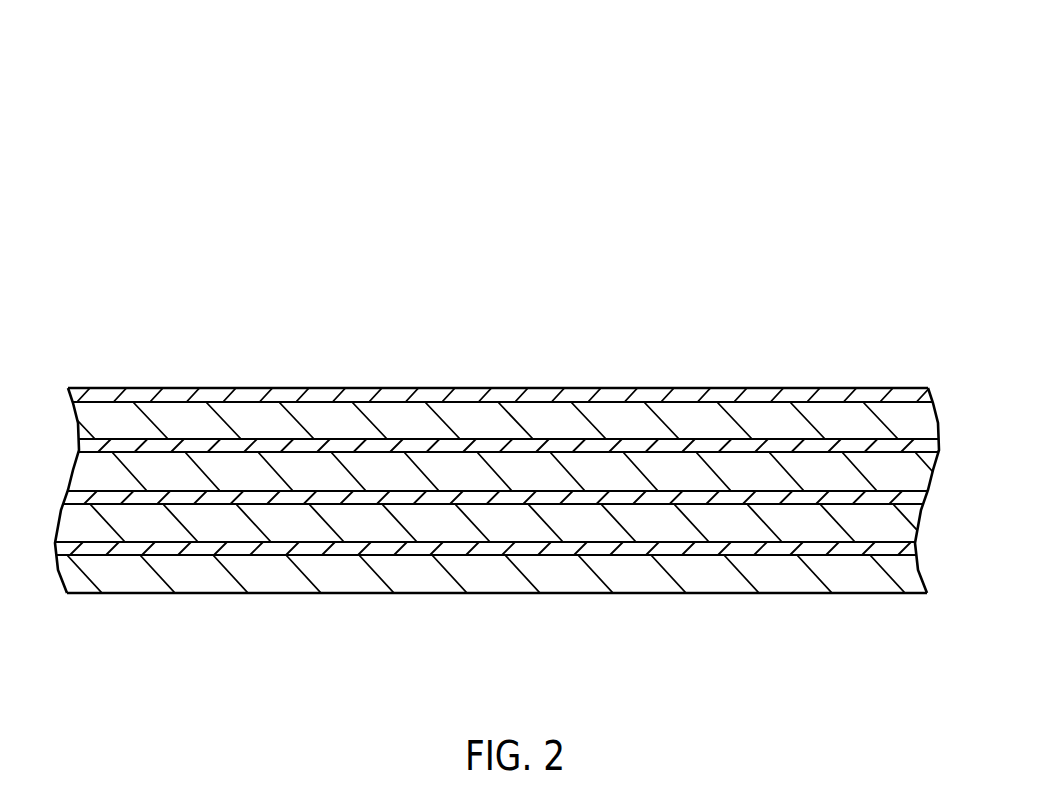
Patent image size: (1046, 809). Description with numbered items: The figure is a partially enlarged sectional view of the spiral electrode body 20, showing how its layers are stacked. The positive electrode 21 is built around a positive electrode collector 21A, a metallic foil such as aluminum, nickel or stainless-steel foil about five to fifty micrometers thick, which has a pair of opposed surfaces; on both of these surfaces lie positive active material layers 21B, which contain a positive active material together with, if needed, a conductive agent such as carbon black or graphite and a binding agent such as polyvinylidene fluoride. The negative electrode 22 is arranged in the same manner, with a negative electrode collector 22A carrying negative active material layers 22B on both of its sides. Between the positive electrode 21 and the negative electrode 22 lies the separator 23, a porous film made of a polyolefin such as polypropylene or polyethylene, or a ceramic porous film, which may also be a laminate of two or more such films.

The spiral electrode body 20 is at (862, 147).
The positive electrode 21 is at (368, 288).
The positive electrode collector 21A is at (135, 447).
The positive active material layer 21B is at (257, 468).
The negative electrode 22 is at (762, 290).
The negative electrode collector 22A is at (527, 553).
The negative active material layer 22B is at (655, 577).
The separator 23 is at (803, 502).